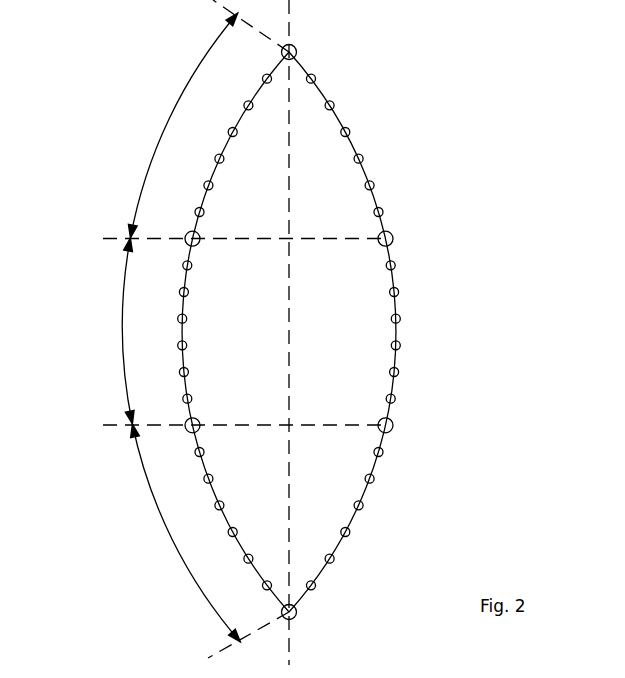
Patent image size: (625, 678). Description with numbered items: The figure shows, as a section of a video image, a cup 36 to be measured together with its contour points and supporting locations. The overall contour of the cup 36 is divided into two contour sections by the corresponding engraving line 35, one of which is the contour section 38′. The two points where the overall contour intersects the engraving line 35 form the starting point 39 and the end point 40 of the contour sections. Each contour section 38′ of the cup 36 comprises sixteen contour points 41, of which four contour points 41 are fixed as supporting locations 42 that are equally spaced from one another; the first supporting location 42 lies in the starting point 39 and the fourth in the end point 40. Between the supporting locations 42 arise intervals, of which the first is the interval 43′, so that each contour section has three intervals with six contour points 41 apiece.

The engraving line 35 is at (290, 465).
The cup 36 is at (256, 332).
The contour section 38′ is at (294, 332).
The starting point 39 is at (283, 53).
The end point 40 is at (297, 611).
The contour points 41 is at (363, 159).
The supporting locations 42 is at (393, 238).
The interval 43′ is at (179, 125).